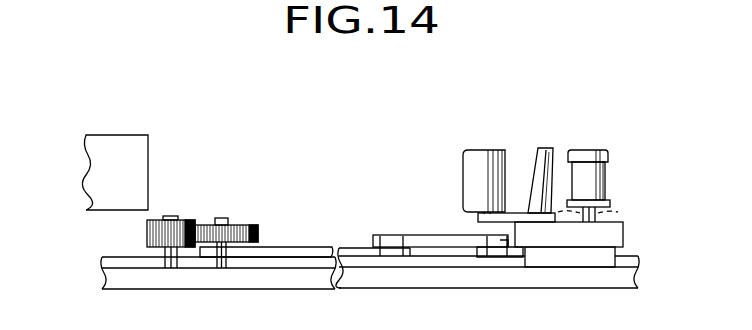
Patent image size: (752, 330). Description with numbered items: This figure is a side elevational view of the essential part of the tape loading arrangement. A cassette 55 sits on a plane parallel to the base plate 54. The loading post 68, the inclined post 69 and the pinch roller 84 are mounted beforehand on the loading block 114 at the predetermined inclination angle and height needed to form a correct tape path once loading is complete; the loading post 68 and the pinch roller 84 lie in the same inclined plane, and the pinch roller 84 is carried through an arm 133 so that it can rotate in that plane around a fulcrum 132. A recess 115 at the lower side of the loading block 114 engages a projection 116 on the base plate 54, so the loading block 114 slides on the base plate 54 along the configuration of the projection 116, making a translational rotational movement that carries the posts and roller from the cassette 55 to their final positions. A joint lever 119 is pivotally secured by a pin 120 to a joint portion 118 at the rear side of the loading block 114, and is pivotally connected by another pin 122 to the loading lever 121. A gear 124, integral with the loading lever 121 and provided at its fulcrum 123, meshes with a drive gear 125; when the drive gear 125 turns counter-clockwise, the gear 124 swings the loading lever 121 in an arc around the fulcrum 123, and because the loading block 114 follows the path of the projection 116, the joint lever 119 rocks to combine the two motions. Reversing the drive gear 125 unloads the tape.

The base plate 54 is at (168, 280).
The cassette 55 is at (97, 182).
The loading post 68 is at (600, 172).
The inclined post 69 is at (545, 155).
The pinch roller 84 is at (467, 167).
The loading block 114 is at (615, 233).
The recess 115 is at (592, 260).
The projection 116 is at (425, 266).
The joint portion 118 is at (516, 256).
The joint lever 119 is at (432, 240).
The pin 120 is at (492, 250).
The loading lever 121 is at (311, 247).
The pin 122 is at (389, 239).
The fulcrum 123 is at (218, 220).
The gear 124 is at (247, 228).
The drive gear 125 is at (188, 220).
The fulcrum 132 is at (618, 212).
The arm 133 is at (517, 212).